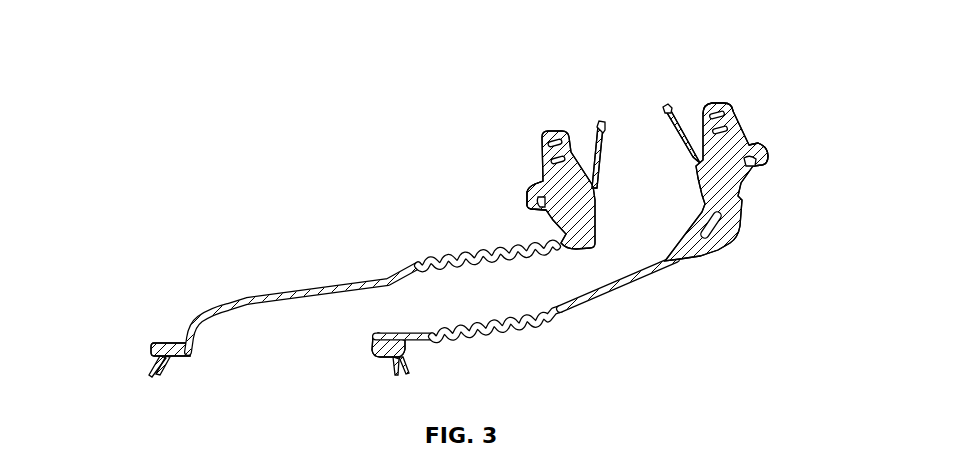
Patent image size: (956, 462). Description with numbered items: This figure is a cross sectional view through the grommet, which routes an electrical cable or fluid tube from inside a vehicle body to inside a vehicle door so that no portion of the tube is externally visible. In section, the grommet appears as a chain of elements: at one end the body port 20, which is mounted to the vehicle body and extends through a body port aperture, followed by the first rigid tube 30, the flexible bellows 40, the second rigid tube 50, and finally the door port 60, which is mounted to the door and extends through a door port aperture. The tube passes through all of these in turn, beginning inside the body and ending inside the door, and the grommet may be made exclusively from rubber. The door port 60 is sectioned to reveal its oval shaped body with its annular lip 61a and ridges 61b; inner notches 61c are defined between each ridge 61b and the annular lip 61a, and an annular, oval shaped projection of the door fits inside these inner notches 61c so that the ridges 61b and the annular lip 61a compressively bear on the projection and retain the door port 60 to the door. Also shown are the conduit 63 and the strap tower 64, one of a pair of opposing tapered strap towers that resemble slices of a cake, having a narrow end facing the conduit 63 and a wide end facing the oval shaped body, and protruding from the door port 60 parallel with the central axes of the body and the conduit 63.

The body port 20 is at (138, 352).
The first rigid tube 30 is at (318, 279).
The flexible bellows 40 is at (468, 241).
The second rigid tube 50 is at (670, 285).
The door port 60 is at (748, 157).
The annular lip 61a is at (751, 146).
The ridges 61b is at (540, 213).
The inner notches 61c is at (757, 168).
The conduit 63 is at (594, 153).
The strap tower 64 is at (717, 102).